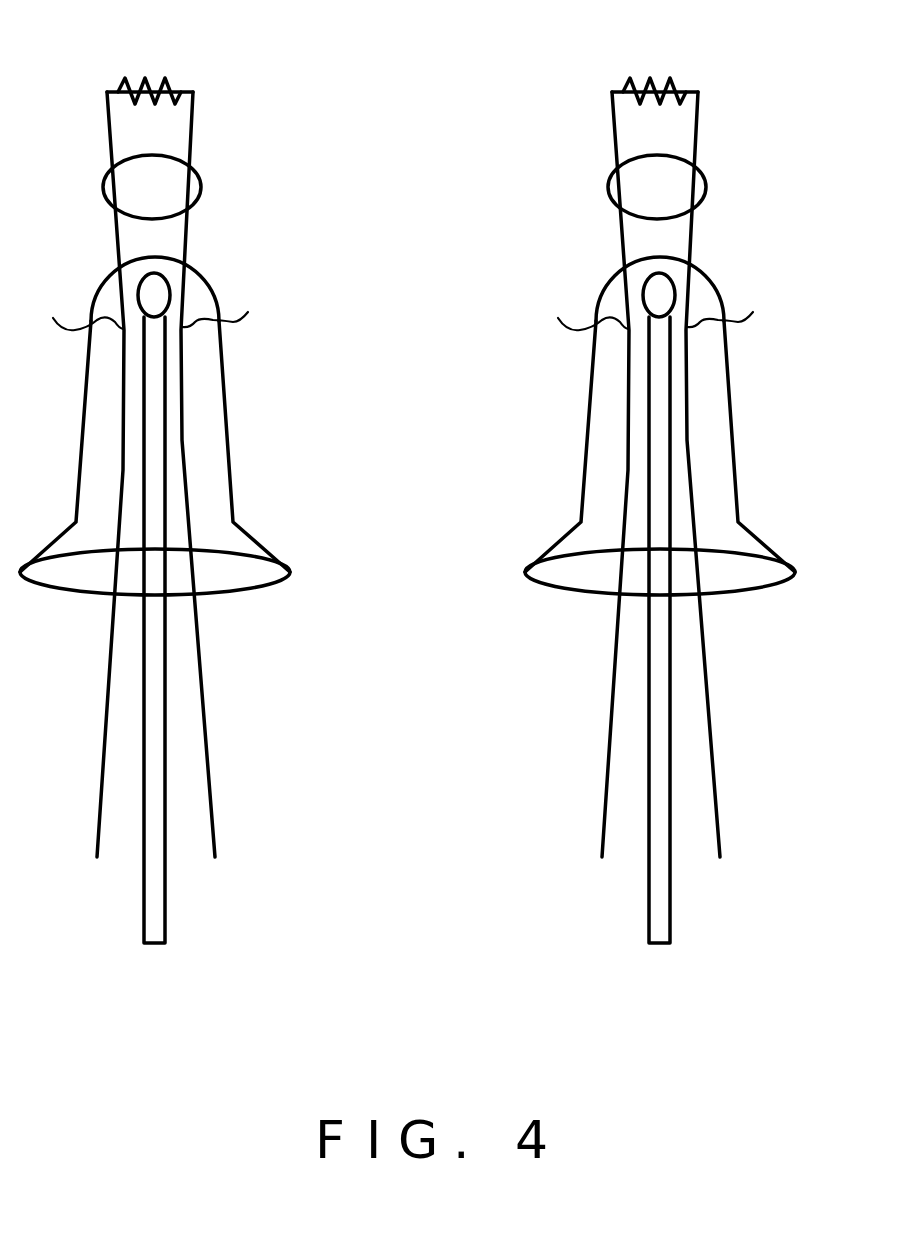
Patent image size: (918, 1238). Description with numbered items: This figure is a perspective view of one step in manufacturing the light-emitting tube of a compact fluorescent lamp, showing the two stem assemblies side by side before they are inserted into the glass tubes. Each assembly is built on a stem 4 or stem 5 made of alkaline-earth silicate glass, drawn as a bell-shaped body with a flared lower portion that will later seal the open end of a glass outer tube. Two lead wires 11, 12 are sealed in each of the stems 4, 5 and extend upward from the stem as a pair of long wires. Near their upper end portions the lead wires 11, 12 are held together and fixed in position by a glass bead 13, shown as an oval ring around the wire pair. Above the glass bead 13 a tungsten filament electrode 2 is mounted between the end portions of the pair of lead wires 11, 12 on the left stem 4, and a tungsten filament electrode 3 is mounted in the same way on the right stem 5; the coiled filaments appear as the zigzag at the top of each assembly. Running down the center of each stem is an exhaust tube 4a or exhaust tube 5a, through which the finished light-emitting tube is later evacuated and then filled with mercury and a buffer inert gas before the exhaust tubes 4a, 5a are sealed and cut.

The tungsten filament electrode 2 is at (147, 78).
The tungsten filament electrode 3 is at (652, 78).
The stem 4 is at (93, 468).
The stem 5 is at (598, 468).
The exhaust tube 4a is at (157, 928).
The exhaust tube 5a is at (662, 928).
The lead wire 11 is at (324, 311).
The lead wire 12 is at (484, 303).
The glass bead 13 is at (202, 183).